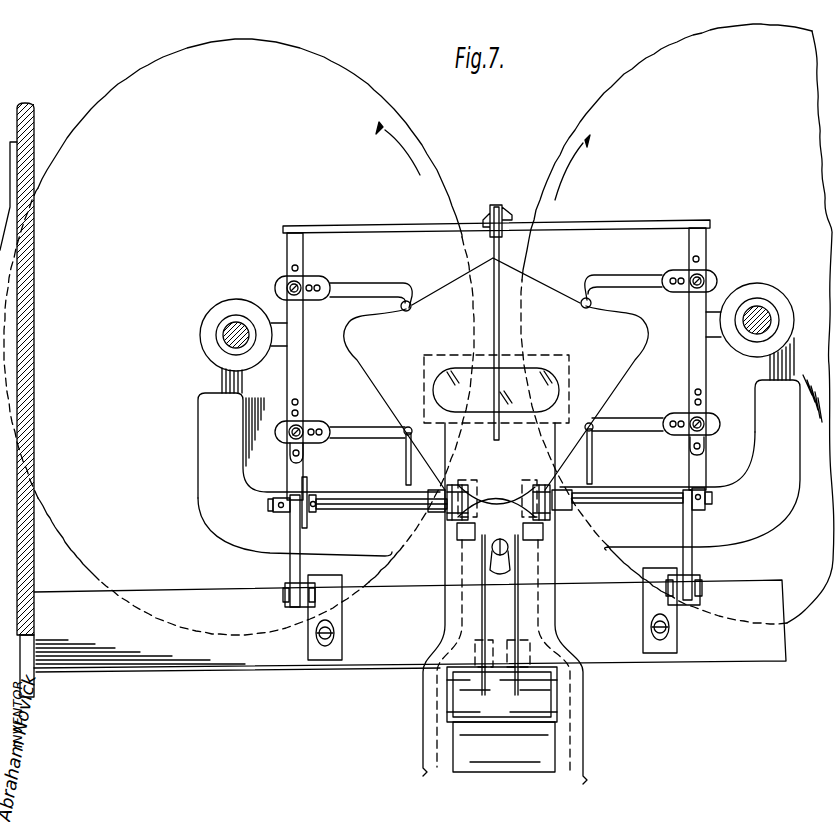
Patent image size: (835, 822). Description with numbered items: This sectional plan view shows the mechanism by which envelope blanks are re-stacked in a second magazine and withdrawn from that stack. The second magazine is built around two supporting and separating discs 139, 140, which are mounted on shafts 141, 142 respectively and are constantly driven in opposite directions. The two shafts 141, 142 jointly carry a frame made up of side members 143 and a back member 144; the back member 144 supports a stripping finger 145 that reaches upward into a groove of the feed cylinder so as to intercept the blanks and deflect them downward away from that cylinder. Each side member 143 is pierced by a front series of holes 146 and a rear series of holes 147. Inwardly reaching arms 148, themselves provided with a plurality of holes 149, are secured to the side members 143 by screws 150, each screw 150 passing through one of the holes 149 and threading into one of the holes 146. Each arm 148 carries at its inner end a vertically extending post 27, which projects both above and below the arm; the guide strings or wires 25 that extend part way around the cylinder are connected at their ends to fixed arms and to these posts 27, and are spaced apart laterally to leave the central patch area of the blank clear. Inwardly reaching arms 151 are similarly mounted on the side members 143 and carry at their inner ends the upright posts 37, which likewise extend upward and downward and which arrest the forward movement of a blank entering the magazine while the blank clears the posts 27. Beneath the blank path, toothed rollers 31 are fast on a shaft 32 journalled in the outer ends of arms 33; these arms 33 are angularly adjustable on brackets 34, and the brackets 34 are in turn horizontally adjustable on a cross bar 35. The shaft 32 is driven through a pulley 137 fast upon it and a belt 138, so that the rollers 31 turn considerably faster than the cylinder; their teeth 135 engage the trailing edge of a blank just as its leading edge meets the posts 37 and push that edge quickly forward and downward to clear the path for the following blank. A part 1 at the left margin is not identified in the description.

The frame wall 1 is at (40, 400).
The guide strings or wires 25 is at (406, 470).
The upright posts 27 is at (405, 435).
The rollers 31 is at (447, 508).
The shaft 32 is at (388, 511).
The arms 33 is at (290, 533).
The brackets 34 is at (308, 636).
The cross bar 35 is at (210, 670).
The upright posts 37 is at (410, 310).
The teeth 135 is at (522, 486).
The pulley 137 is at (302, 485).
The belt 138 is at (308, 478).
The supporting and separating disc 139 is at (345, 82).
The supporting and separating disc 140 is at (600, 108).
The shaft 141 is at (232, 320).
The shaft 142 is at (765, 310).
The side members 143 is at (303, 354).
The back member 144 is at (395, 228).
The stripping finger 145 is at (493, 262).
The front series of holes 146 is at (291, 412).
The rear series of holes 147 is at (291, 267).
The inwardly reaching arms 148 is at (355, 430).
The holes 149 is at (312, 436).
The screw 150 is at (297, 283).
The inwardly reaching arms 151 is at (358, 283).